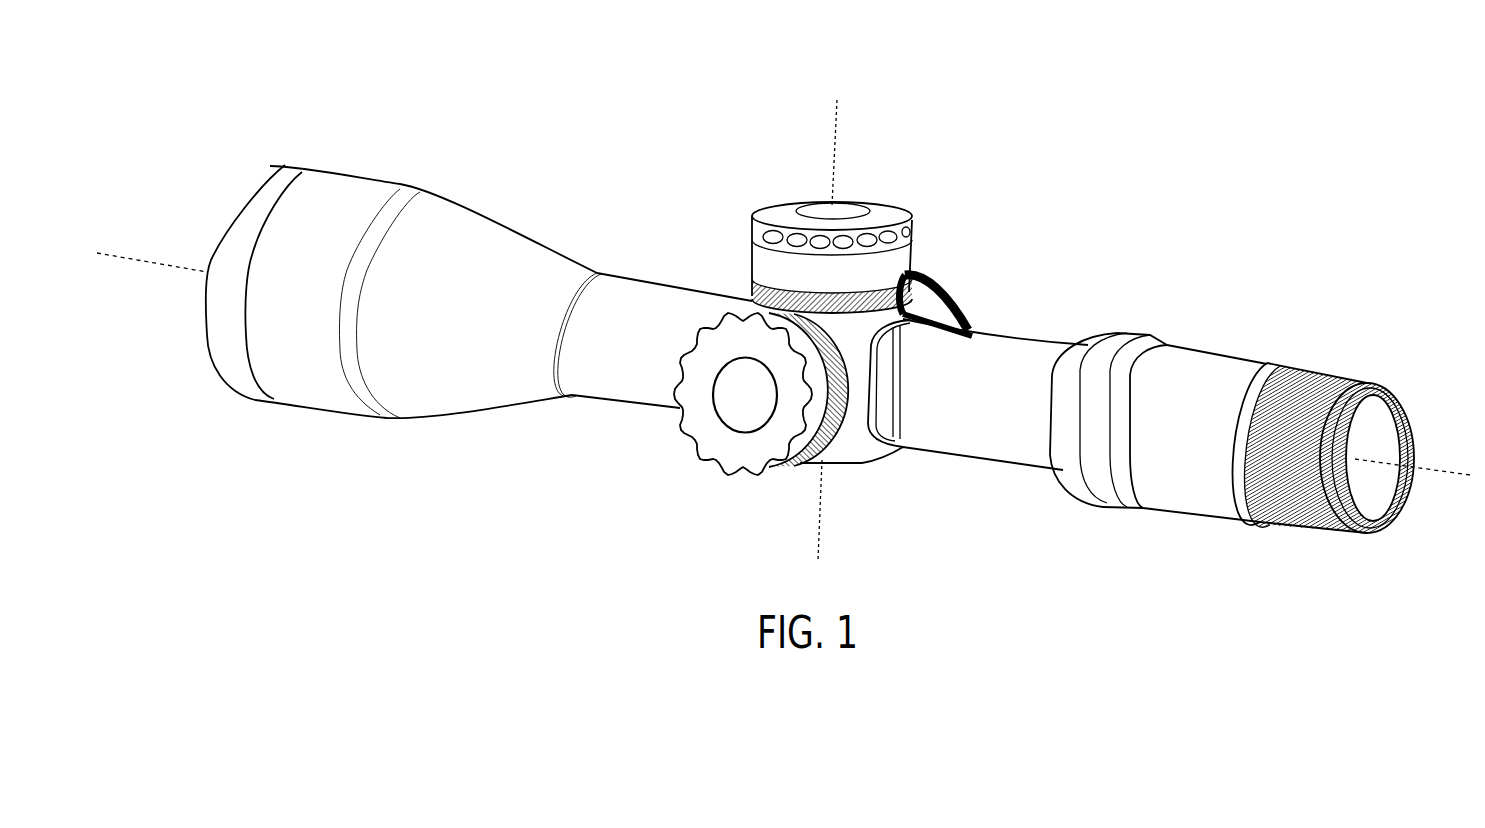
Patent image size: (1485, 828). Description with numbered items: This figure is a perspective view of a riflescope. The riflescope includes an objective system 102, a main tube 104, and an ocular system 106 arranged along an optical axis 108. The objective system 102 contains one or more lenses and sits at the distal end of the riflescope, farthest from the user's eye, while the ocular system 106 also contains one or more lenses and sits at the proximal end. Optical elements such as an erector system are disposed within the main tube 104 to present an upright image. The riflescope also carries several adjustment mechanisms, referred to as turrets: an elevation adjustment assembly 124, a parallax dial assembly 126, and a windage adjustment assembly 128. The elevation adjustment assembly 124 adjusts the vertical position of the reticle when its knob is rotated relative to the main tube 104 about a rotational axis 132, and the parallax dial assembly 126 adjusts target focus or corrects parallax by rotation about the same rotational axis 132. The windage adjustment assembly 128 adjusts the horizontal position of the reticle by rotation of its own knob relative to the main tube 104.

The objective system 102 is at (410, 163).
The main tube 104 is at (970, 455).
The ocular system 106 is at (1313, 352).
The optical axis 108 is at (112, 257).
The elevation adjustment assembly 124 is at (897, 206).
The parallax dial assembly 126 is at (695, 472).
The windage adjustment assembly 128 is at (975, 296).
The rotational axis 132 is at (836, 142).